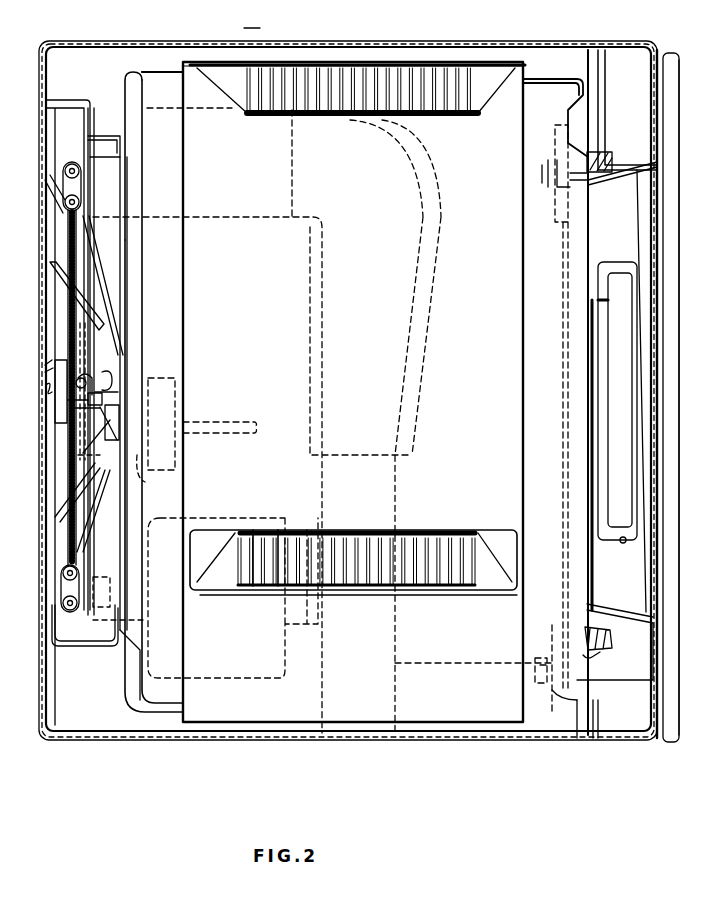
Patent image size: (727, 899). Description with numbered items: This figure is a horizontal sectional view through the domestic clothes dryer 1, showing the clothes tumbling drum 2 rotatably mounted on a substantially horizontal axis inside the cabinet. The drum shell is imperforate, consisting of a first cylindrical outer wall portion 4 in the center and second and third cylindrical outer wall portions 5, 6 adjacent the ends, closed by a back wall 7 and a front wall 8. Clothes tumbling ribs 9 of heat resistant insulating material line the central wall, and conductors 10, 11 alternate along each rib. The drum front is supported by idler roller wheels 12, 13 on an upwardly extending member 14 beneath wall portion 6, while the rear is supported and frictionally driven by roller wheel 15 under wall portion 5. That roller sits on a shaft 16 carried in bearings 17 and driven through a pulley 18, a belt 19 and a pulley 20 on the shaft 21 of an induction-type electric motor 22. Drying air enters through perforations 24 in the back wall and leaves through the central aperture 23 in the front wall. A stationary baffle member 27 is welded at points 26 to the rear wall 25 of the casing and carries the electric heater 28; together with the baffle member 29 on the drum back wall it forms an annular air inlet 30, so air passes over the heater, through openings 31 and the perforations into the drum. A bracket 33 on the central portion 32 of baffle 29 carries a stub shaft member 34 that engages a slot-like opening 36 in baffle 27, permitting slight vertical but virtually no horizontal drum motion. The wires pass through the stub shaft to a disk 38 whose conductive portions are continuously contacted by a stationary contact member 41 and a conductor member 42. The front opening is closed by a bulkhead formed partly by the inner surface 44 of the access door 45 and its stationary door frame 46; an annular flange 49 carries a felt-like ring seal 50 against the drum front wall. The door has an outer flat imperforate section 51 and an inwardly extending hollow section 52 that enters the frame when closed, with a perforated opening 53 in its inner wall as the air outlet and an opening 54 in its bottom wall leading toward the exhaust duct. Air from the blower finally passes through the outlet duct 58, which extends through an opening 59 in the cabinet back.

The domestic clothes dryer 1 is at (252, 18).
The clothes tumbling drum 2 is at (373, 62).
The first cylindrical outer wall portion 4 is at (283, 62).
The second cylindrical outer wall portion 5 is at (158, 70).
The third cylindrical outer wall portion 6 is at (549, 77).
The back wall 7 is at (145, 110).
The front wall 8 is at (565, 120).
The clothes tumbling ribs 9 is at (225, 577).
The conductors 10 is at (272, 585).
The conductors 11 is at (277, 530).
The idler roller wheel 12 is at (552, 637).
The idler roller wheel 13 is at (560, 150).
The upwardly extending member 14 is at (592, 708).
The roller wheel 15 is at (160, 378).
The shaft 16 is at (223, 422).
The bearings 17 is at (145, 482).
The pulley 18 is at (85, 425).
The belt 19 is at (87, 450).
The pulley 20 is at (95, 622).
The motor shaft 21 is at (108, 595).
The induction-type electric motor 22 is at (224, 665).
The central aperture 23 is at (575, 177).
The perforations 24 is at (126, 212).
The rear wall of casing 25 is at (45, 276).
The welding points 26 is at (47, 238).
The stationary baffle member 27 is at (90, 648).
The electric heater 28 is at (65, 170).
The baffle member 29 is at (87, 174).
The annular air inlet 30 is at (112, 143).
The openings 31 is at (95, 268).
The central portion of baffle 32 is at (115, 358).
The bracket 33 is at (120, 410).
The stub shaft member 34 is at (80, 400).
The slot-like opening 36 is at (78, 380).
The disk 38 is at (60, 358).
The contact member 41 is at (52, 363).
The conductor member 42 is at (48, 387).
The inner surface of access door 44 is at (588, 268).
The access door 45 is at (671, 233).
The door frame 46 is at (626, 178).
The annular flange 49 is at (606, 637).
The ring seal 50 is at (595, 648).
The outer flat imperforate section 51 is at (671, 272).
The hollow section 52 is at (651, 196).
The perforated opening 53 is at (595, 497).
The opening 54 is at (623, 543).
The outlet duct 58 is at (310, 333).
The opening 59 is at (52, 118).